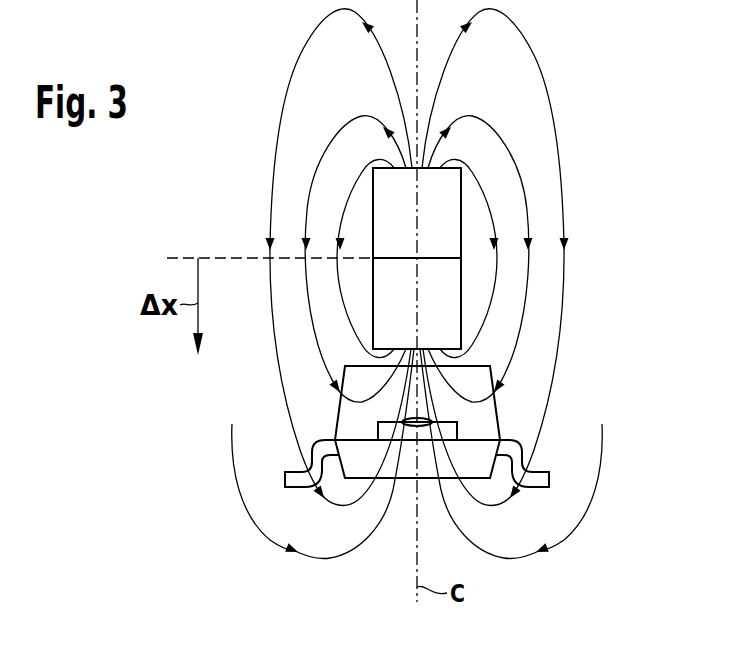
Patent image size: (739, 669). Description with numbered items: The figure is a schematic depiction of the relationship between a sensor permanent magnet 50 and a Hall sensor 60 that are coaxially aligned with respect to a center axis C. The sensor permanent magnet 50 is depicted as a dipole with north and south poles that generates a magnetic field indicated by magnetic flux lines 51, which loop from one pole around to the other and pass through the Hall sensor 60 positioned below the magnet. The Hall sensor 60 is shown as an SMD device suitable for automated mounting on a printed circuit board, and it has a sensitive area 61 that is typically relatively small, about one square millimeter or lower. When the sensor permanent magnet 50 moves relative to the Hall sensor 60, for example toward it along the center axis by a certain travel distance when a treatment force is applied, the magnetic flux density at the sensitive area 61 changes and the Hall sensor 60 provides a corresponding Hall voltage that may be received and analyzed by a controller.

The sensor permanent magnet 50 is at (470, 209).
The magnetic flux lines 51 is at (566, 300).
The Hall sensor 60 is at (512, 404).
The sensitive area 61 is at (415, 426).